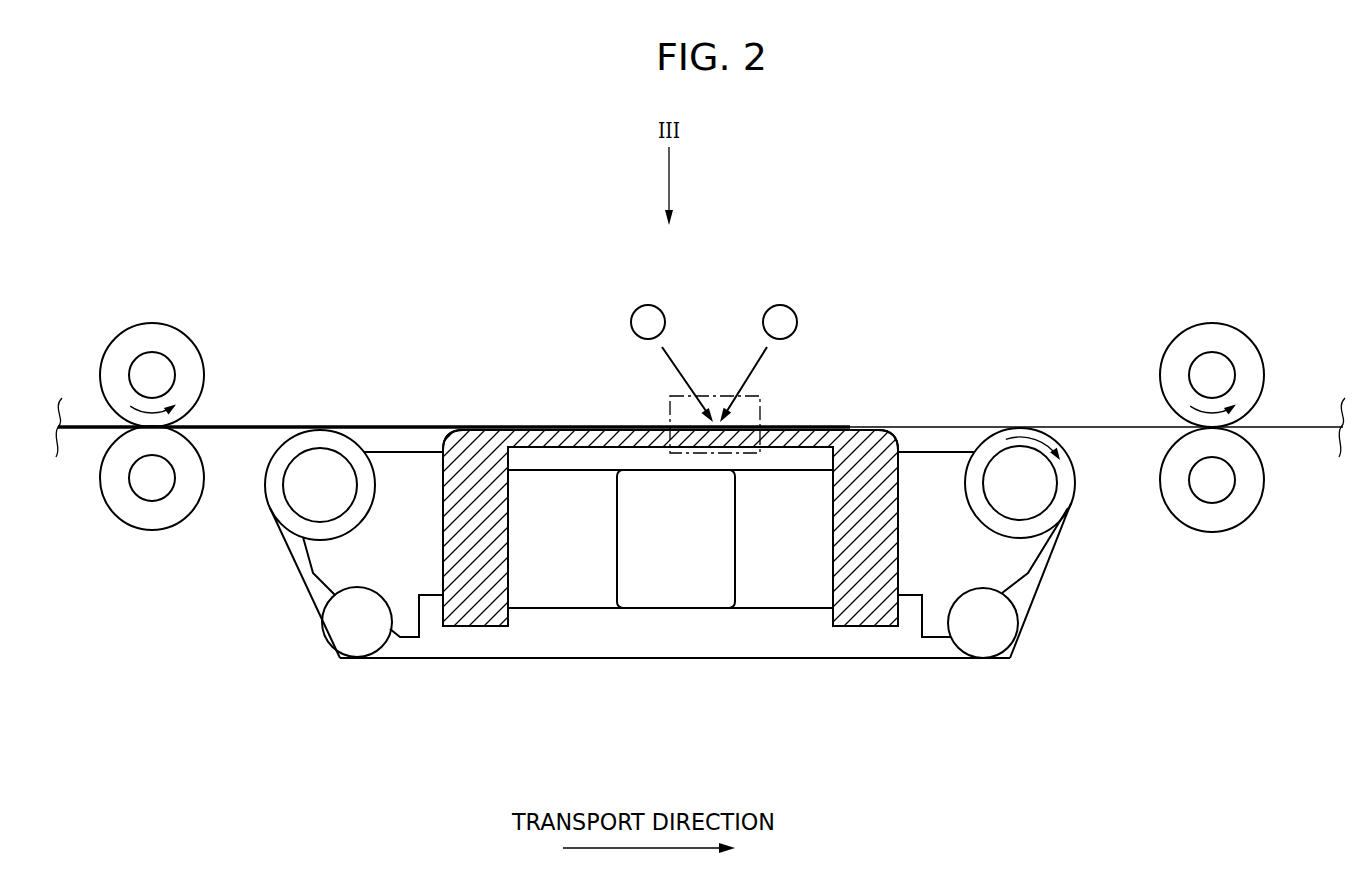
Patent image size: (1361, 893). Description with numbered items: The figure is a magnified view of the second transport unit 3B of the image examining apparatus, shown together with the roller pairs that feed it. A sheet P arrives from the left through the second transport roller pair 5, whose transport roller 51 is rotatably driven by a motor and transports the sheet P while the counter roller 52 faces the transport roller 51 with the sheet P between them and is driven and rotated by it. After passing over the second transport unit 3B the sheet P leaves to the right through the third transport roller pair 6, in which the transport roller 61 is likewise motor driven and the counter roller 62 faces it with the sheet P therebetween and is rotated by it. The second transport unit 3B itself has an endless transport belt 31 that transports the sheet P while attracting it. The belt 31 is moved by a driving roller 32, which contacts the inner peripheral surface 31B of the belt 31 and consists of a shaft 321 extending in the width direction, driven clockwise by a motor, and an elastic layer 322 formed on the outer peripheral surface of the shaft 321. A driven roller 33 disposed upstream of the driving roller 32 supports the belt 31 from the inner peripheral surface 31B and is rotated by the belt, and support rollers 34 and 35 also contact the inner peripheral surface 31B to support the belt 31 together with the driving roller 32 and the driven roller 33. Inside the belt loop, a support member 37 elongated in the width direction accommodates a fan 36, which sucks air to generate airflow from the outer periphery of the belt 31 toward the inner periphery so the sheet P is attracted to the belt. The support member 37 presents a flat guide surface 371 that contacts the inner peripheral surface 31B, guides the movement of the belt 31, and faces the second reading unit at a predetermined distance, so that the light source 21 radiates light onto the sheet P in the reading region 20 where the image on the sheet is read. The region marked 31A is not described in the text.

The sheet P is at (405, 426).
The second transport roller pair 5 is at (152, 411).
The transport roller 51 is at (183, 328).
The counter roller 52 is at (140, 530).
The third transport roller pair 6 is at (1247, 404).
The transport roller 61 is at (1212, 323).
The counter roller 62 is at (1255, 513).
The light source 21 is at (631, 320).
The reading region 20 is at (760, 408).
The second transport unit 3B is at (685, 568).
The support member 37 is at (718, 552).
The guide surface 371 is at (835, 428).
The fan 36 is at (693, 580).
The driven roller 33 is at (308, 497).
The support roller 34 is at (352, 645).
The support roller 35 is at (995, 642).
The driving roller 32 is at (1028, 521).
The elastic layer 322 is at (1062, 475).
The shaft 321 is at (1043, 487).
The transport belt 31 is at (670, 629).
The bottom portion of frame 31A is at (517, 658).
The inner peripheral surface 31B is at (446, 657).